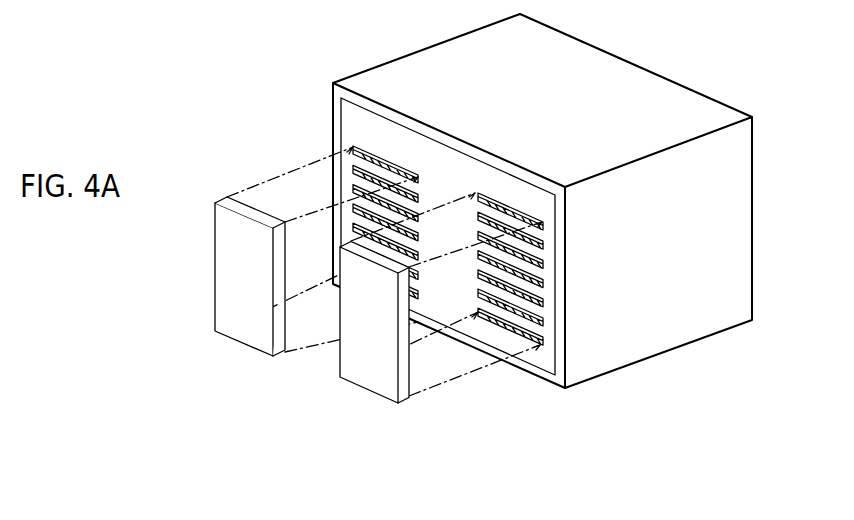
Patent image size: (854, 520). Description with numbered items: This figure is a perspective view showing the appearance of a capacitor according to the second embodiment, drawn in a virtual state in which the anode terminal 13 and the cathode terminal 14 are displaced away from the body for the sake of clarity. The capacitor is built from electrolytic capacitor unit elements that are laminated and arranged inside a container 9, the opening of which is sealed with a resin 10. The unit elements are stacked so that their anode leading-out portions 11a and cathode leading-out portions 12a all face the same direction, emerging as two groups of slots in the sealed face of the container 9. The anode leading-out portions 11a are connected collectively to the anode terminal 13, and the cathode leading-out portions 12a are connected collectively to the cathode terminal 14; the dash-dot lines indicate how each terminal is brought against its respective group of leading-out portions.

The container 9 is at (662, 107).
The resin 10 is at (370, 133).
The anode leading-out portion 11a is at (350, 173).
The cathode leading-out portion 12a is at (510, 322).
The anode terminal 13 is at (233, 265).
The cathode terminal 14 is at (372, 347).